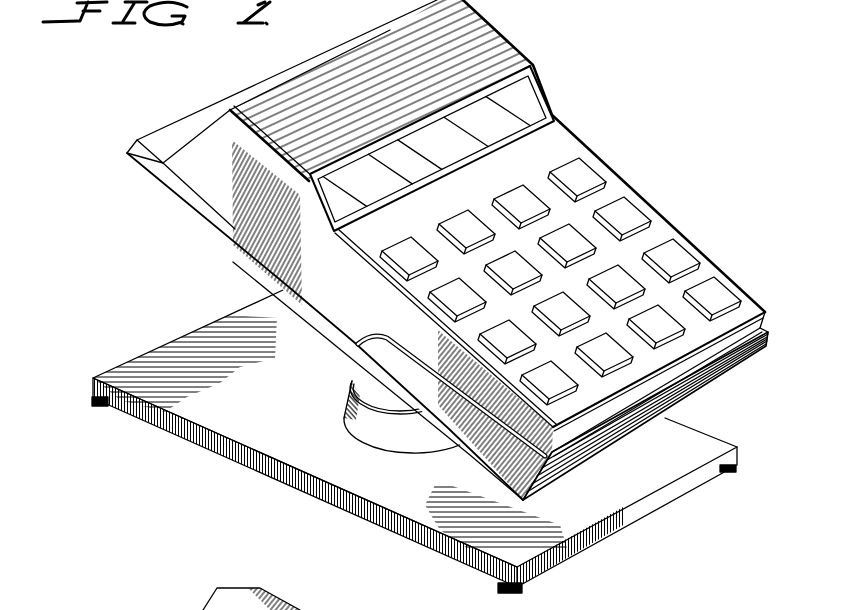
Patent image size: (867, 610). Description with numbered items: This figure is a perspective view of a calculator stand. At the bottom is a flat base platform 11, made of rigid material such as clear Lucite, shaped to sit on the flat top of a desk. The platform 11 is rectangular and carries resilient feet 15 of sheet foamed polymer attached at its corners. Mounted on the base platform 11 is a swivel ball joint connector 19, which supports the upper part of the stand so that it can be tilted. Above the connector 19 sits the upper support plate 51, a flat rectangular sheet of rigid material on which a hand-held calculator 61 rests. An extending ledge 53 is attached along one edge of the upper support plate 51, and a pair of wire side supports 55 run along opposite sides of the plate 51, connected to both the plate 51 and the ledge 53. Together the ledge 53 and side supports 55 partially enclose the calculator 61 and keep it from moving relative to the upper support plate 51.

The base platform 11 is at (161, 360).
The resilient feet 15 is at (95, 401).
The swivel ball joint connector 19 is at (335, 388).
The upper support plate 51 is at (233, 236).
The extending ledge 53 is at (535, 470).
The wire side supports 55 is at (478, 420).
The hand-held calculator 61 is at (590, 150).